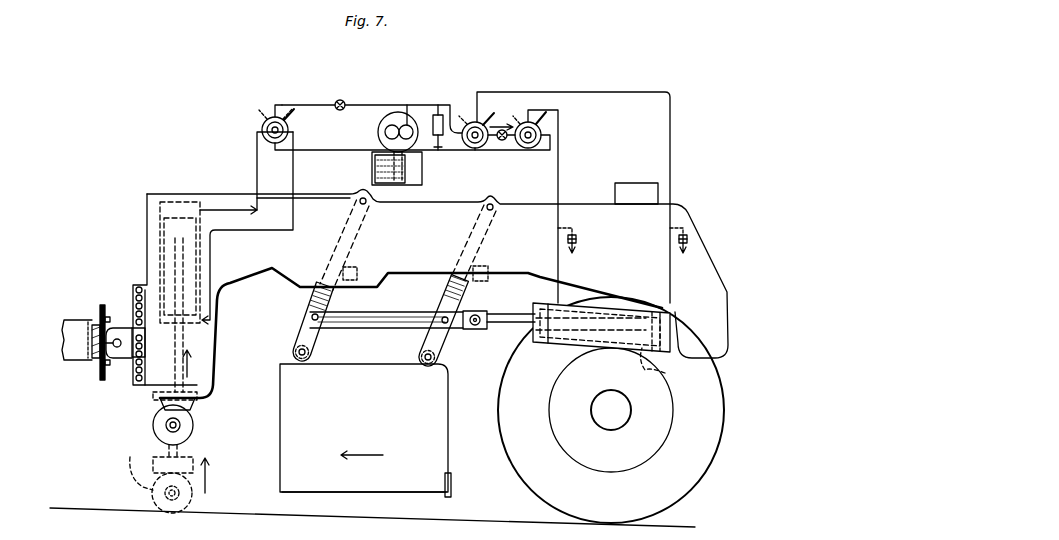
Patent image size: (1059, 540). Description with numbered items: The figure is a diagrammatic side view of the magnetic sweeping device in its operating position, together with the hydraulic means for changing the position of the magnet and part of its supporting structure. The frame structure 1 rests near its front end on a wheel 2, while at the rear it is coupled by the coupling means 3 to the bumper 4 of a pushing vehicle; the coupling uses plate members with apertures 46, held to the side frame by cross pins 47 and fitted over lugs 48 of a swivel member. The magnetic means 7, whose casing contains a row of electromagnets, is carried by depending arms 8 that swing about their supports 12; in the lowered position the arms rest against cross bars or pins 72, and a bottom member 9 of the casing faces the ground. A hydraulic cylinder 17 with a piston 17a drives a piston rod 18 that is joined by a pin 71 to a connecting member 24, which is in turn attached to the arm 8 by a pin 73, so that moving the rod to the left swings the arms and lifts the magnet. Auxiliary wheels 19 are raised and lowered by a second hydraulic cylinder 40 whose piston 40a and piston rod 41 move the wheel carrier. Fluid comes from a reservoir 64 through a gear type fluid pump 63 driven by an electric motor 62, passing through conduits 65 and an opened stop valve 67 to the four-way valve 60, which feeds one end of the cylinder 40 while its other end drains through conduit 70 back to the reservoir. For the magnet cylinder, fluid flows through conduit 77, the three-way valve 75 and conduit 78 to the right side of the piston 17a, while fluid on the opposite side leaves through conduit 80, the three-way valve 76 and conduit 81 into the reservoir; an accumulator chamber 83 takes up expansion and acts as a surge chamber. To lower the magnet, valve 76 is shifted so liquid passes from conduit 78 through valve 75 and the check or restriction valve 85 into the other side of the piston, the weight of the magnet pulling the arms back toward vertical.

The frame structure 1 is at (592, 188).
The wheels 2 is at (707, 440).
The coupling means 3 is at (113, 298).
The bumper 4 is at (70, 335).
The magnetic means 7 is at (428, 452).
The depending arms 8 is at (317, 293).
The bottom plate 9 is at (377, 480).
The supports 12 is at (362, 199).
The hydraulic cylinders 17 is at (573, 345).
The pistons 17a is at (665, 373).
The piston rods 18 is at (517, 328).
The auxiliary wheels 19 is at (157, 430).
The connecting members 24 is at (395, 334).
The hydraulic cylinder 40 is at (182, 210).
The piston 40a is at (162, 230).
The piston rod 41 is at (167, 376).
The apertures 46 is at (133, 278).
The cross pins 47 is at (143, 342).
The lugs 48 is at (123, 358).
The four-way valve 60 is at (272, 115).
The electric motor 62 is at (380, 125).
The gear type fluid pump 63 is at (383, 134).
The reservoir 64 is at (420, 175).
The conduits 65 is at (302, 105).
The stop valve 67 is at (345, 100).
The conduit 70 is at (272, 235).
The pins 71 is at (472, 333).
The cross bars or pins 72 is at (360, 267).
The pins 73 is at (310, 316).
The three-way valve 75 is at (482, 122).
The three-way valve 76 is at (526, 149).
The conduit 77 is at (433, 106).
The conduit 78 is at (606, 93).
The conduit 80 is at (563, 147).
The conduit 81 is at (480, 150).
The accumulator chamber 83 is at (445, 115).
The check or restriction valve 85 is at (503, 140).